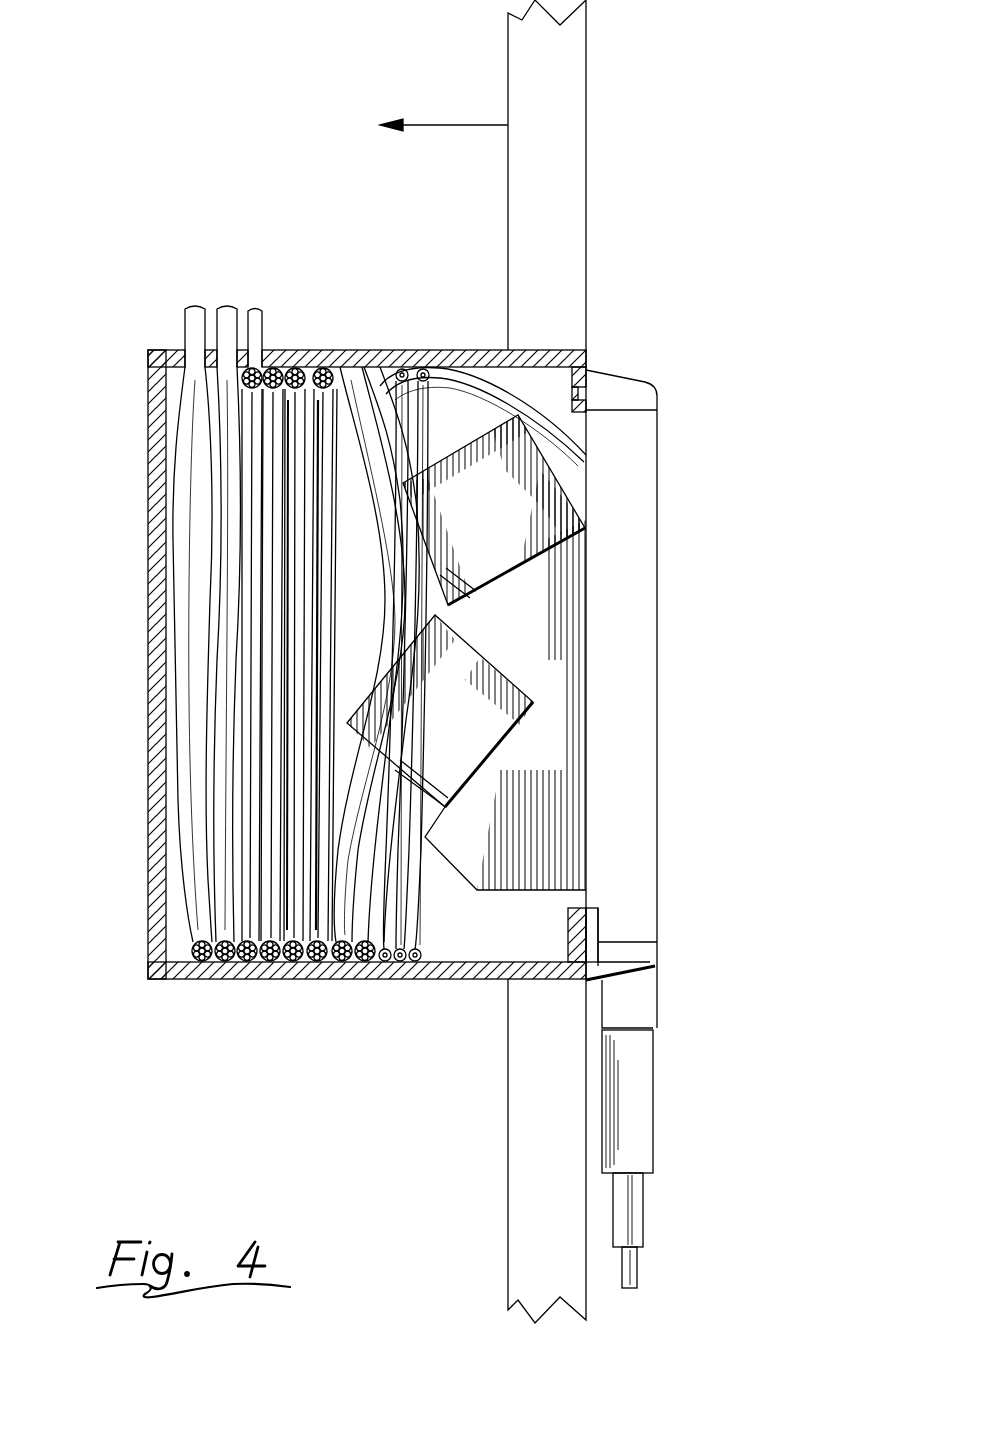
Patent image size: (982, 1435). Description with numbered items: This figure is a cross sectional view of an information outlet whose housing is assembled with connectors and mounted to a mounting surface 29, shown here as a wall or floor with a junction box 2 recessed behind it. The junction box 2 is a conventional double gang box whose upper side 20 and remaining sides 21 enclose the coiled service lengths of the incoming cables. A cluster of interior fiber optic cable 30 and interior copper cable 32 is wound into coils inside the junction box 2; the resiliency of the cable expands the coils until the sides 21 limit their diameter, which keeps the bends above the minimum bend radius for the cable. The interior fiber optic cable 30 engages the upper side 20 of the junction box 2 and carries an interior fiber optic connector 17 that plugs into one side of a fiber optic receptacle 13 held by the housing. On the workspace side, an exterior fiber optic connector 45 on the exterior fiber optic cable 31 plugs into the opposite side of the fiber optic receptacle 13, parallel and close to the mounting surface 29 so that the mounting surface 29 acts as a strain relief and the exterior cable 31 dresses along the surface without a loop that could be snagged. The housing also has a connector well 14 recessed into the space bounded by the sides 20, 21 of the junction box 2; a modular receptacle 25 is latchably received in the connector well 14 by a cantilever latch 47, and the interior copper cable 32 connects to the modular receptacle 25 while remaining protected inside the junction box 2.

The junction box 2 is at (148, 575).
The fiber optic receptacle 13 is at (625, 990).
The connector well 14 is at (497, 806).
The interior fiber optic connector 17 is at (626, 1205).
The upper side of the junction box 20 is at (452, 356).
The remaining sides of the junction box 21 is at (178, 448).
The modular receptacle 25 is at (517, 510).
The mounting surface 29 is at (588, 210).
The interior fiber optic cable 30 is at (363, 368).
The exterior fiber optic cable 31 is at (628, 1283).
The interior copper cable 32 is at (480, 388).
The exterior fiber optic connector 45 is at (636, 1105).
The cantilever latch 47 is at (420, 838).